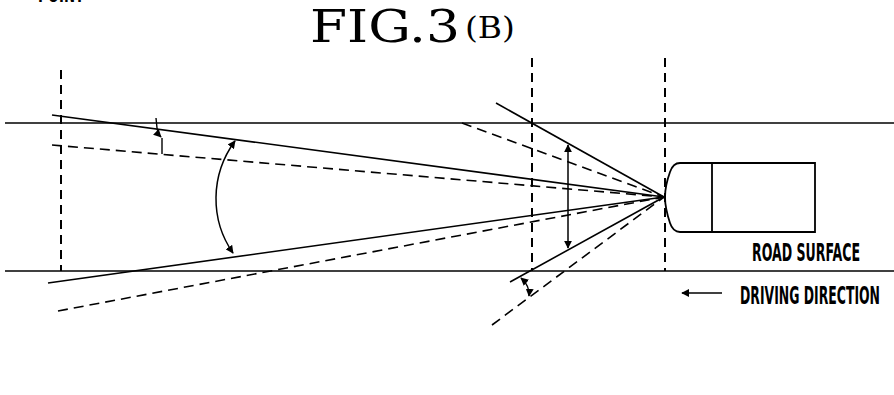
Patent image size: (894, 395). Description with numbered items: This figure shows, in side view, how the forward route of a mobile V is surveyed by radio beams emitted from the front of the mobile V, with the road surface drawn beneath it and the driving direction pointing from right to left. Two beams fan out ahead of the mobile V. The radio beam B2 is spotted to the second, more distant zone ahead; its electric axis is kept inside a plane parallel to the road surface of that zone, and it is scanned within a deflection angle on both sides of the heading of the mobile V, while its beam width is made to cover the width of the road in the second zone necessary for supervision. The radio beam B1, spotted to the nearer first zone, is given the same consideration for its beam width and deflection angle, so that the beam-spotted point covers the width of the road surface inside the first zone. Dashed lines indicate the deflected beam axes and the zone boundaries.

The mobile V is at (740, 197).
The radio beam B1 is at (597, 171).
The radio beam B2 is at (214, 209).